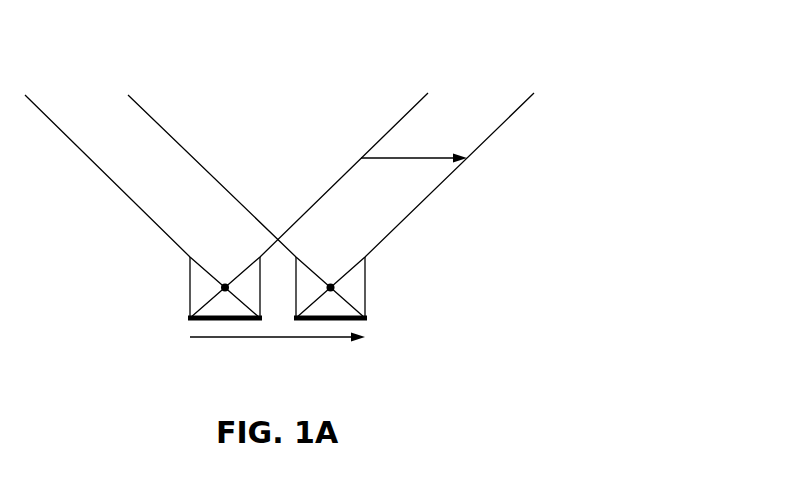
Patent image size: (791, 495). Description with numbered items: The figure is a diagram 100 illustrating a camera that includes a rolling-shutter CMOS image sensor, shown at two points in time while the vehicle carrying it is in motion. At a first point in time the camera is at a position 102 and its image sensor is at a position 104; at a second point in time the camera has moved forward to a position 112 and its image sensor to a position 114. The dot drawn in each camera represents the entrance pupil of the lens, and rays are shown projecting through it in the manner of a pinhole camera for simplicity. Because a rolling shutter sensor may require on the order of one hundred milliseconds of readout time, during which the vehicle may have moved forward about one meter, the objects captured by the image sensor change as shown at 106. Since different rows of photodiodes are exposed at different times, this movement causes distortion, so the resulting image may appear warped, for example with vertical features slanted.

The diagram 100 is at (581, 52).
The camera position 102 is at (190, 276).
The image sensor position 104 is at (190, 320).
The change in captured objects 106 is at (422, 158).
The camera position 112 is at (366, 262).
The image sensor position 114 is at (366, 320).